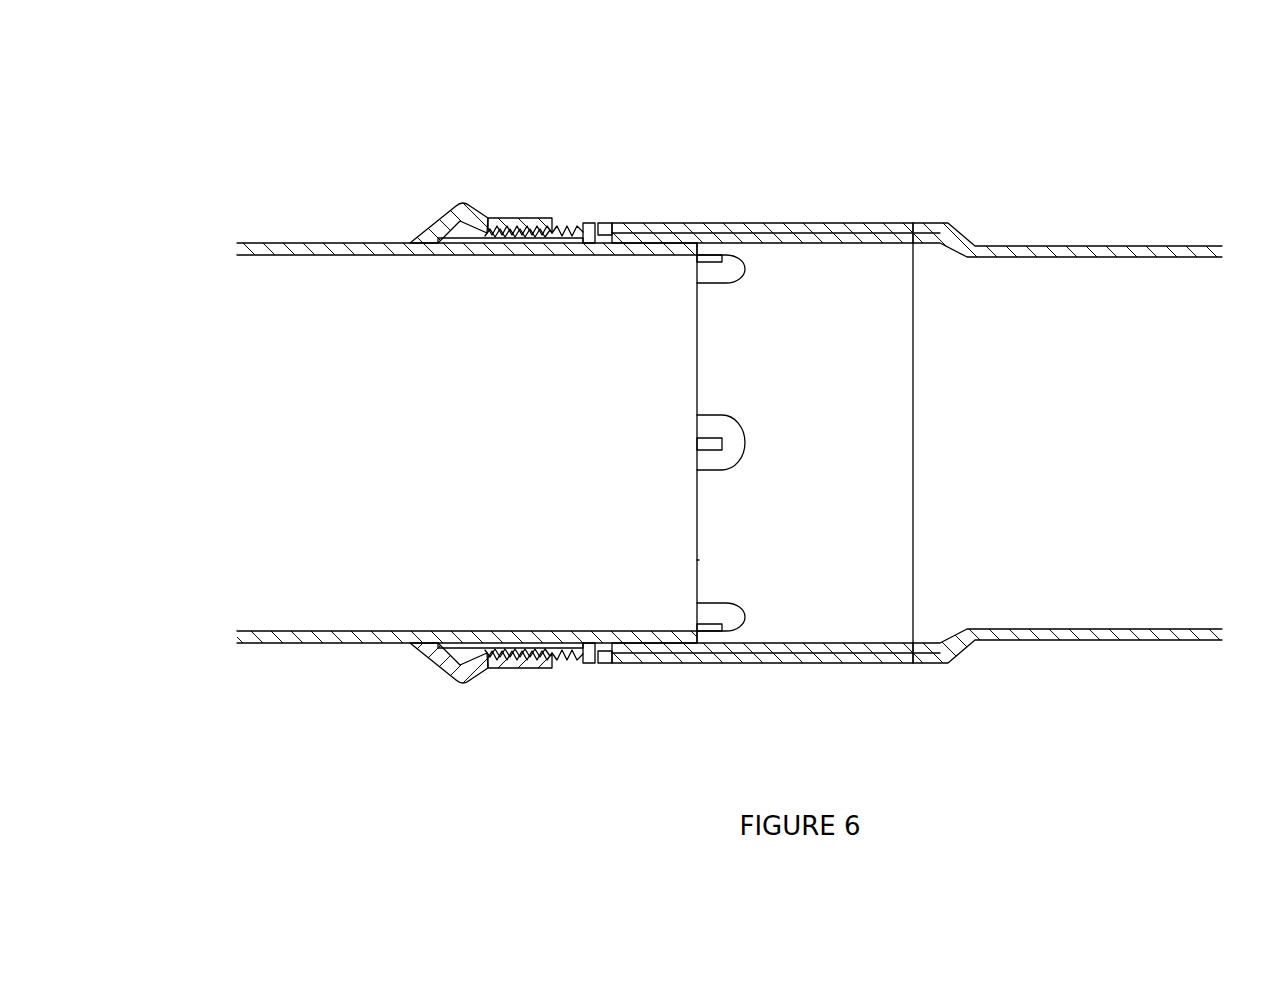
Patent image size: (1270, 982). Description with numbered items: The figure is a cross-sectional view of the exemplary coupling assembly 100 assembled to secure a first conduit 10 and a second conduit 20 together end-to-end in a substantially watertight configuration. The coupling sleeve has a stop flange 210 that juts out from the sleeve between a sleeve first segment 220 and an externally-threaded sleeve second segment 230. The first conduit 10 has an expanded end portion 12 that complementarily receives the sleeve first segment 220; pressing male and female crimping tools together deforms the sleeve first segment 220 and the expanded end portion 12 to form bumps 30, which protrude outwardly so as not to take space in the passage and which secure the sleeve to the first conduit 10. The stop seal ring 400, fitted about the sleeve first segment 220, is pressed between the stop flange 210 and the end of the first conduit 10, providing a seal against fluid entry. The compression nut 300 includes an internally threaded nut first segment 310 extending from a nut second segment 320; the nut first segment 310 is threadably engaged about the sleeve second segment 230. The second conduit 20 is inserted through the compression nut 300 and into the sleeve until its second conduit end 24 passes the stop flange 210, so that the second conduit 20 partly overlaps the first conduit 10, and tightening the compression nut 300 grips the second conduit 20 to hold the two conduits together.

The first conduit 10 is at (1177, 182).
The expanded end portion 12 is at (945, 236).
The second conduit 20 is at (259, 182).
The second conduit end 24 is at (699, 560).
The bumps 30 is at (729, 632).
The coupling assembly 100 is at (226, 727).
The stop flange 210 is at (590, 222).
The sleeve first segment 220 is at (776, 237).
The sleeve second segment 230 is at (568, 668).
The compression nut 300 is at (495, 182).
The nut first segment 310 is at (516, 668).
The nut second segment 320 is at (460, 680).
The stop seal ring 400 is at (606, 222).